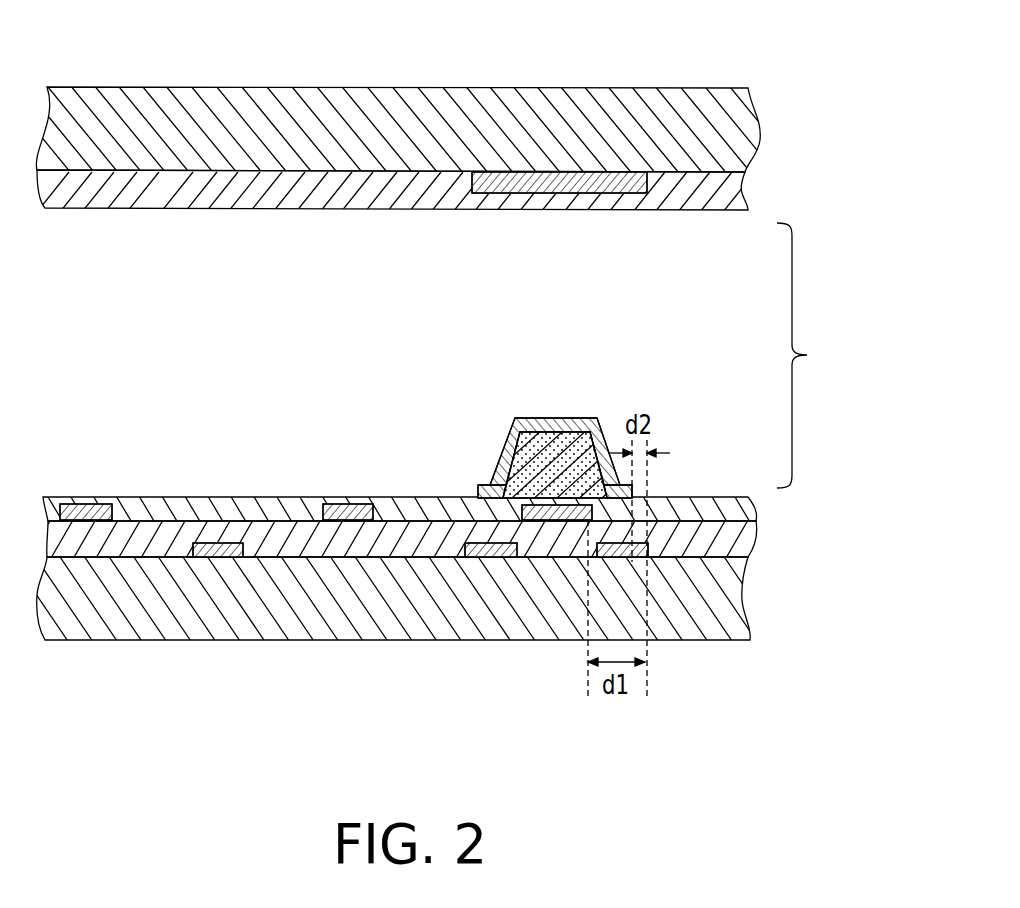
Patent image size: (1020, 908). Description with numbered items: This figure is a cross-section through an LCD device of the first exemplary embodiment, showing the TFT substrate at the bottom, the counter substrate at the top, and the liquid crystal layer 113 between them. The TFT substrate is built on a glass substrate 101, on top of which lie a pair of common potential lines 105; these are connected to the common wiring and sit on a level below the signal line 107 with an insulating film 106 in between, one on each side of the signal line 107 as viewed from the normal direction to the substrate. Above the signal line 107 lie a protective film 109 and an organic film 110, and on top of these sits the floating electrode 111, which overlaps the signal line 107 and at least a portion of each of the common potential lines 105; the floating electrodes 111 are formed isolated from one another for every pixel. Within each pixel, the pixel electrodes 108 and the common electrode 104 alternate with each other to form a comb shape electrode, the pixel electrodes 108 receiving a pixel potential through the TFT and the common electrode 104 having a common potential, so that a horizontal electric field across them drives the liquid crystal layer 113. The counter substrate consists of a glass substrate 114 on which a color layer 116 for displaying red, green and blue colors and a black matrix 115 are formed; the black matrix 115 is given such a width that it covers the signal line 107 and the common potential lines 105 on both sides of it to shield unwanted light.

The glass substrate 101 is at (746, 580).
The common electrode 104 is at (212, 557).
The common potential lines 105 is at (587, 558).
The insulating film 106 is at (750, 542).
The signal line 107 is at (490, 485).
The pixel electrodes 108 is at (97, 504).
The protective film 109 is at (748, 503).
The organic film 110 is at (543, 418).
The floating electrode 111 is at (586, 418).
The liquid crystal layer 113 is at (817, 355).
The glass substrate 114 is at (746, 120).
The black matrix 115 is at (608, 193).
The color layer 116 is at (745, 187).